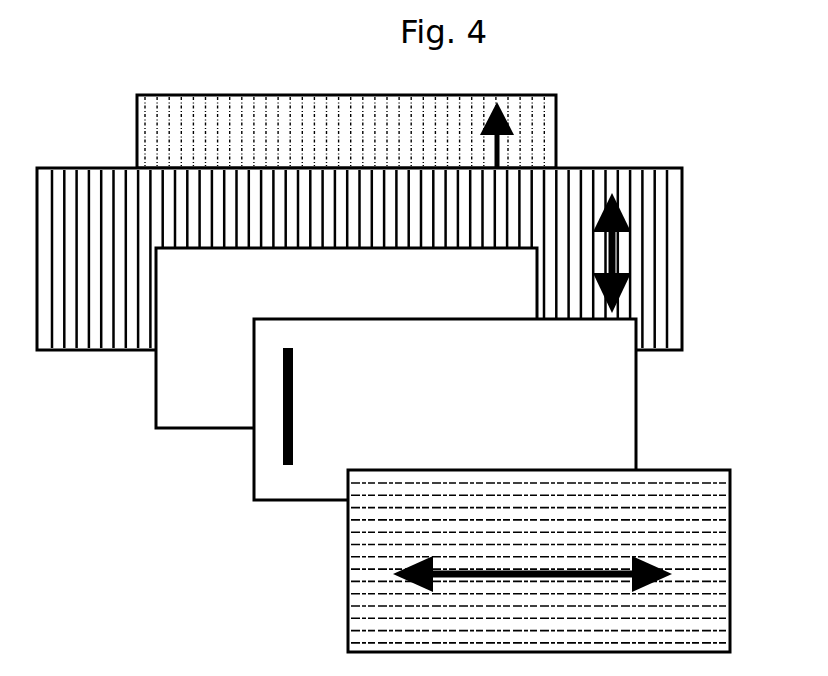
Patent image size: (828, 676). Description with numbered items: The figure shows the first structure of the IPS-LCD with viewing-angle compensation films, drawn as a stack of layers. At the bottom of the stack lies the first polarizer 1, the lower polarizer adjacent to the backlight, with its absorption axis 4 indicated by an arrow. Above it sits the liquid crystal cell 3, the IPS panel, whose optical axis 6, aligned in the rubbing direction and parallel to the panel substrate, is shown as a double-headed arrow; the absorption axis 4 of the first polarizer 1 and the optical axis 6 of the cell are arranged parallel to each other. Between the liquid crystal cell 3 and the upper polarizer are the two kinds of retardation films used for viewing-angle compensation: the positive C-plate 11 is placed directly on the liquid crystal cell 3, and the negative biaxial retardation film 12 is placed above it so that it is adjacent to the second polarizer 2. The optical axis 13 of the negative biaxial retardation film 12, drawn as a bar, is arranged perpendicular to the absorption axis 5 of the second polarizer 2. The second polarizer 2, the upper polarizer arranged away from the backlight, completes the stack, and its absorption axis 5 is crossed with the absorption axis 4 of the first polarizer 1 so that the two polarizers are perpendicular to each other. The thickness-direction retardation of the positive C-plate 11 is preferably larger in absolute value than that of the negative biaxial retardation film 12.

The first polarizer 1 is at (346, 131).
The second polarizer 2 is at (539, 561).
The liquid crystal cell 3 is at (359, 259).
The absorption axis of the first polarizer 4 is at (515, 135).
The absorption axis of the second polarizer 5 is at (532, 589).
The optical axis of the liquid crystal cell 6 is at (586, 253).
The positive C-plate 11 is at (346, 338).
The negative biaxial retardation film 12 is at (445, 409).
The optical axis of the negative biaxial retardation film 13 is at (326, 406).